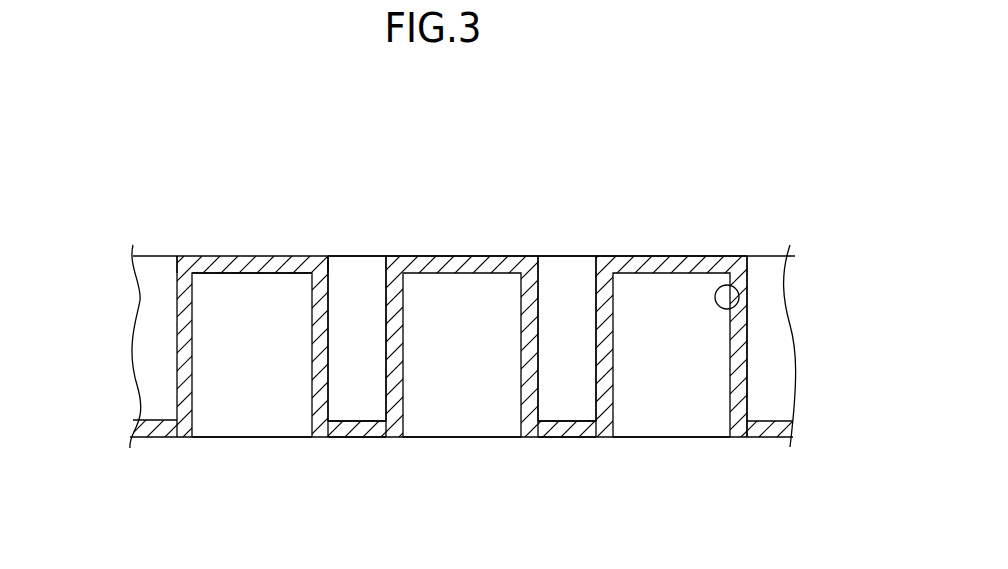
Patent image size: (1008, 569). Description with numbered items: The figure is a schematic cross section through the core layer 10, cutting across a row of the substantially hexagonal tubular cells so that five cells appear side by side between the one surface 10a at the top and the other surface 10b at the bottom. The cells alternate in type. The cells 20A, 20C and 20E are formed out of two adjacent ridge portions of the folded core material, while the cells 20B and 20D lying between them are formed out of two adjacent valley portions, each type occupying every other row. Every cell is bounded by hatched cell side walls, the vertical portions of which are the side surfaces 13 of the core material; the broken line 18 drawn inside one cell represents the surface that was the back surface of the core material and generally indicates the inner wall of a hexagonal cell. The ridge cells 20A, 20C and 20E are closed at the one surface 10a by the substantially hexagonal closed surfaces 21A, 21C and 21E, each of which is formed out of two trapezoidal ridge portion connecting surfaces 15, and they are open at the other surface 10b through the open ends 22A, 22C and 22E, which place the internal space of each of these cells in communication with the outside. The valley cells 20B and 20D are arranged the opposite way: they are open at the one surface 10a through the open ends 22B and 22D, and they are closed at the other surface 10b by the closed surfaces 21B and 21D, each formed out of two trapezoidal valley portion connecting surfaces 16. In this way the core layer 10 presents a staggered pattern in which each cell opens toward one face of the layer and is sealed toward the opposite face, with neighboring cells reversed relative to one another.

The core layer 10 is at (782, 207).
The one surface of the core layer 10a is at (772, 256).
The other surface of the core layer 10b is at (762, 440).
The side surface 13 is at (748, 341).
The ridge portion connecting surface 15 is at (202, 256).
The valley portion connecting surface 16 is at (155, 440).
The broken line 18 is at (739, 290).
The cell 20A is at (228, 346).
The cell 20B is at (357, 287).
The cell 20C is at (467, 293).
The cell 20D is at (568, 292).
The cell 20E is at (677, 295).
The closed surface 21A is at (248, 256).
The closed surface 21B is at (352, 438).
The closed surface 21C is at (462, 256).
The closed surface 21D is at (563, 438).
The closed surface 21E is at (671, 256).
The open end 22A is at (254, 438).
The open end 22B is at (358, 256).
The open end 22C is at (458, 438).
The open end 22D is at (567, 256).
The open end 22E is at (676, 438).